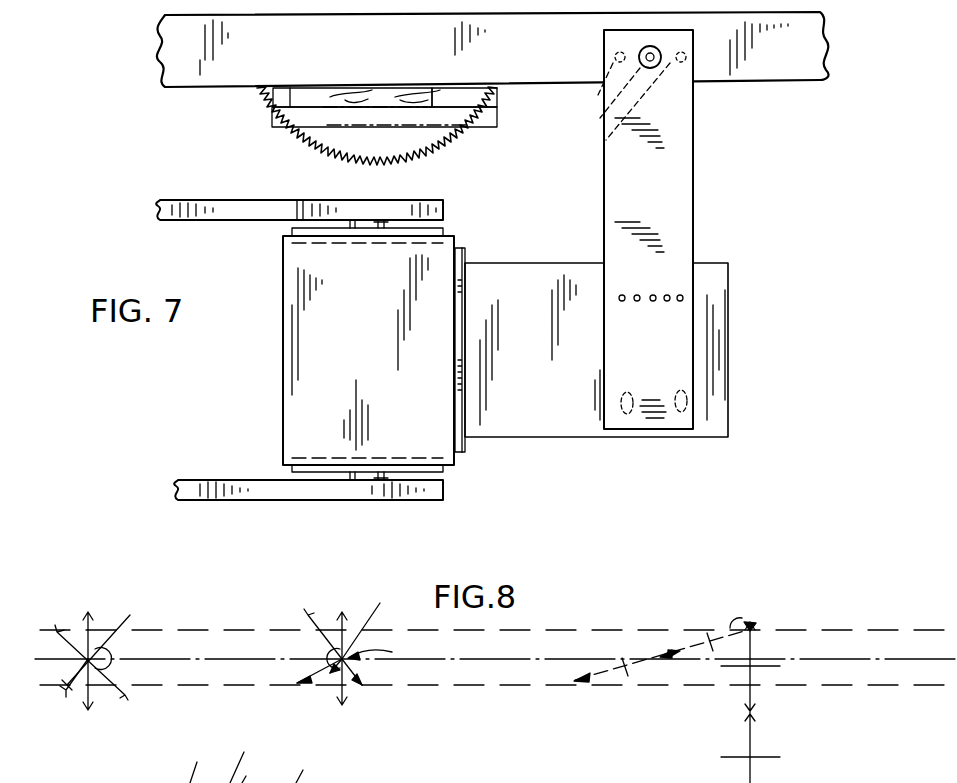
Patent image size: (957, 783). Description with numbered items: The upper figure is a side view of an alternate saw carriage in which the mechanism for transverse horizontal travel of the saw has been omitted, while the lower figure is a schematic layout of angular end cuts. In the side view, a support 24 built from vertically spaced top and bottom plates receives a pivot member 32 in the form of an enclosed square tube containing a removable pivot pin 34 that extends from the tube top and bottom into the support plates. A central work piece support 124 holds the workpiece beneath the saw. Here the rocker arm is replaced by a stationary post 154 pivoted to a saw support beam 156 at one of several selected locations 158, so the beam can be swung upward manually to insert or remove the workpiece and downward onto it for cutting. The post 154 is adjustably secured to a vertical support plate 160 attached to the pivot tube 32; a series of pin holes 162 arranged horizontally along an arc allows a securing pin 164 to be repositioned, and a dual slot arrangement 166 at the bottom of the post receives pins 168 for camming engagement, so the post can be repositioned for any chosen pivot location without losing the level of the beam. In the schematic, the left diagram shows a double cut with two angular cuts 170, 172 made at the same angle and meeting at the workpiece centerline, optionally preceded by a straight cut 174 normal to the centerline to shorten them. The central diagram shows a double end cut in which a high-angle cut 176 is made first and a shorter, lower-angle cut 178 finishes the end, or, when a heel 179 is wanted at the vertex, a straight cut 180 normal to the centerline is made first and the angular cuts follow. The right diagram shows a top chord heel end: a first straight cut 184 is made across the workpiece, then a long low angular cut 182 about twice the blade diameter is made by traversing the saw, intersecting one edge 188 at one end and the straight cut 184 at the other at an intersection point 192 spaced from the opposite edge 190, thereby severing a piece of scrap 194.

In FIG. 7, the support 24 is at (237, 200).
In FIG. 7, the pivot member 32 is at (300, 346).
In FIG. 7, the pivot pin 34 is at (375, 236).
In FIG. 7, the central work piece support 124 is at (497, 120).
In FIG. 7, the stationary post 154 is at (695, 172).
In FIG. 7, the saw support beam 156 is at (533, 68).
In FIG. 7, the selected pivot location 158 is at (642, 55).
In FIG. 7, the vertical support plate 160 is at (545, 270).
In FIG. 7, the pin holes 162 is at (655, 278).
In FIG. 7, the securing pin 164 is at (651, 300).
In FIG. 7, the dual slot arrangement 166 is at (630, 415).
In FIG. 7, the pins 168 is at (678, 393).
In FIG. 8, the angular cut 170 is at (118, 622).
In FIG. 8, the angular cut 172 is at (110, 690).
In FIG. 8, the straight cut 174 is at (88, 697).
In FIG. 8, the cut at a high angle 176 is at (322, 625).
In FIG. 8, the cut at a lower angle 178 is at (306, 690).
In FIG. 8, the heel 179 is at (389, 654).
In FIG. 8, the straight cut 180 is at (379, 627).
In FIG. 8, the angular cut 182 is at (690, 640).
In FIG. 8, the straight cut 184 is at (753, 697).
In FIG. 8, the edge of the workpiece 188 is at (610, 688).
In FIG. 8, the opposite edge of the workpiece 190 is at (648, 630).
In FIG. 8, the point 192 is at (751, 631).
In FIG. 8, the piece of scrap 194 is at (693, 675).